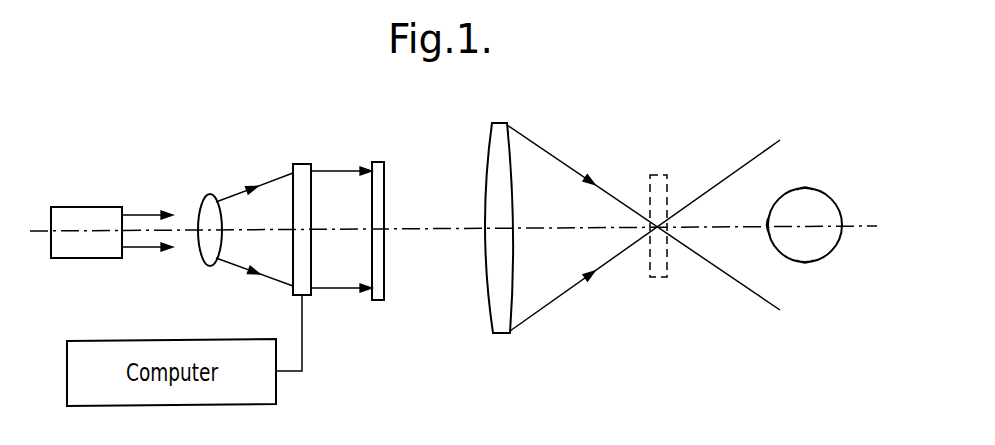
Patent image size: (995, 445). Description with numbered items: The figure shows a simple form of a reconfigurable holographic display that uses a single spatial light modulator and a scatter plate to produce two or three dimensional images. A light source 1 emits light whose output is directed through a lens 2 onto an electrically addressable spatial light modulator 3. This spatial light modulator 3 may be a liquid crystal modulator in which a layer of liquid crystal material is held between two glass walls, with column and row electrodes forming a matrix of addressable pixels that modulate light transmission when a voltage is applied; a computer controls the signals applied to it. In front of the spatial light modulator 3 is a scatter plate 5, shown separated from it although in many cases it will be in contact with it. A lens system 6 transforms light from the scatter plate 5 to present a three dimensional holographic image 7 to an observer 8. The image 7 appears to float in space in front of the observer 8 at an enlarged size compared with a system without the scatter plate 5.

The light source 1 is at (79, 207).
The lens 2 is at (210, 195).
The electrically addressable spatial light modulator 3 is at (300, 164).
The scatter plate 5 is at (377, 162).
The lens system 6 is at (497, 123).
The holographic image 7 is at (655, 175).
The observer 8 is at (822, 205).